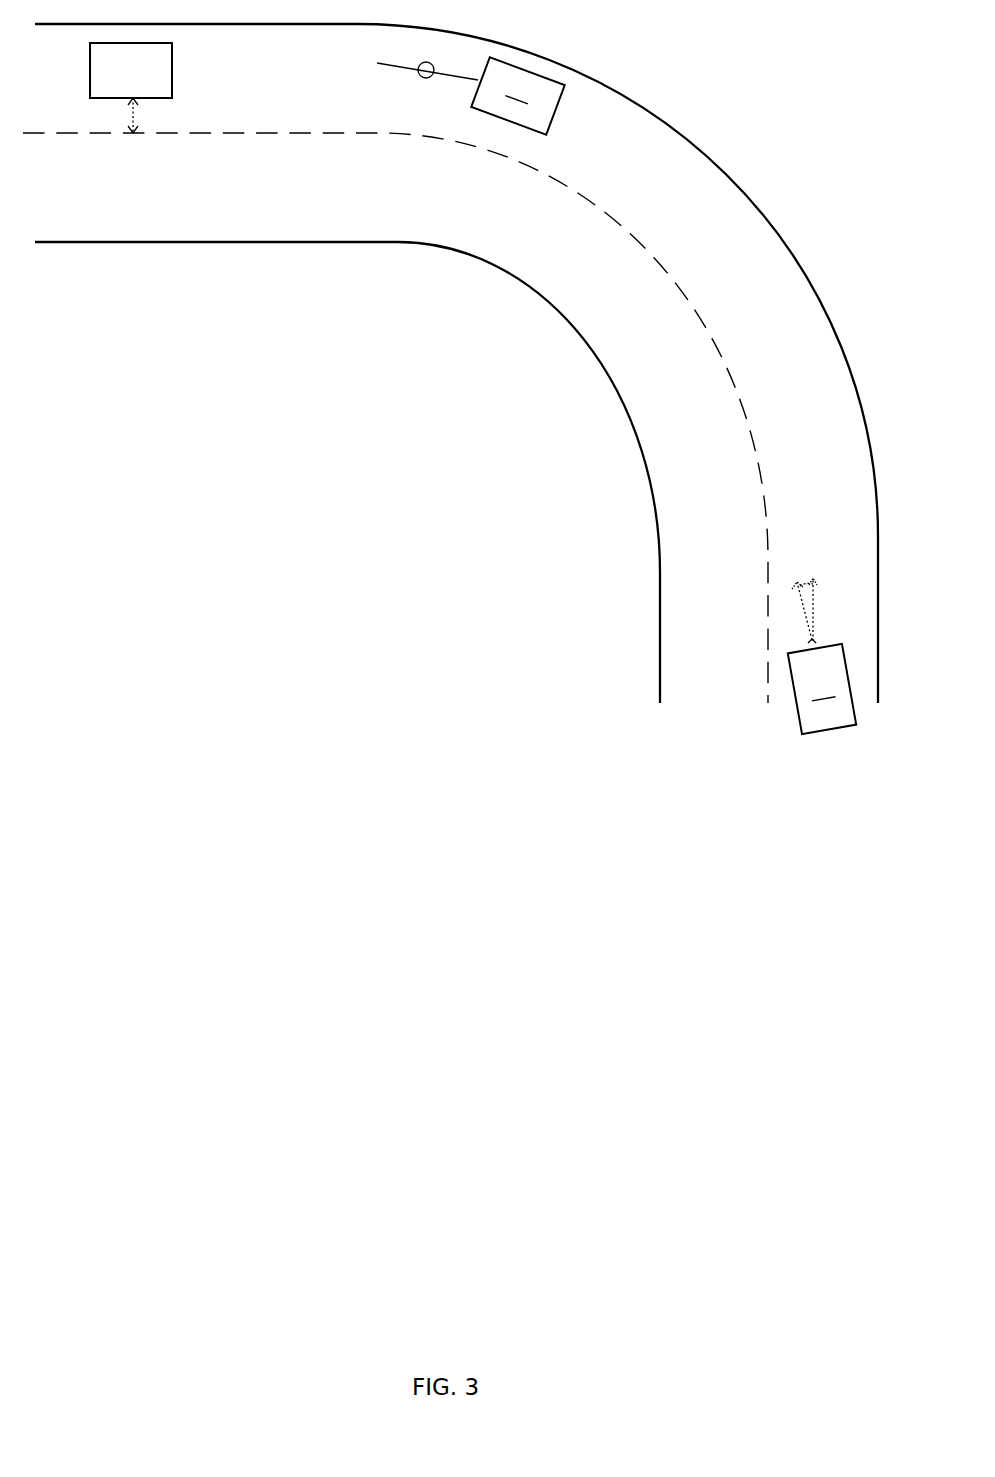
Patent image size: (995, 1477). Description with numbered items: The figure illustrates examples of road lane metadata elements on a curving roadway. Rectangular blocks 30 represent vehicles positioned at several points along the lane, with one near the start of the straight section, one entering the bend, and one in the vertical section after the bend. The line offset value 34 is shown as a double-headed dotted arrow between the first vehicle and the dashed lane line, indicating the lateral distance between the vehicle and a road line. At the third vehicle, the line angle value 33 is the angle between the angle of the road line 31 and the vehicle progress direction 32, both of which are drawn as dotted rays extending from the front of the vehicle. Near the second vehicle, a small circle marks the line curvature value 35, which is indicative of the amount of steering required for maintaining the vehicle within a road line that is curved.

The vehicle 30 is at (119, 80).
The road line 31 is at (813, 631).
The vehicle progress direction 32 is at (804, 614).
The line angle value 33 is at (807, 577).
The line offset value 34 is at (143, 114).
The line curvature value 35 is at (422, 62).